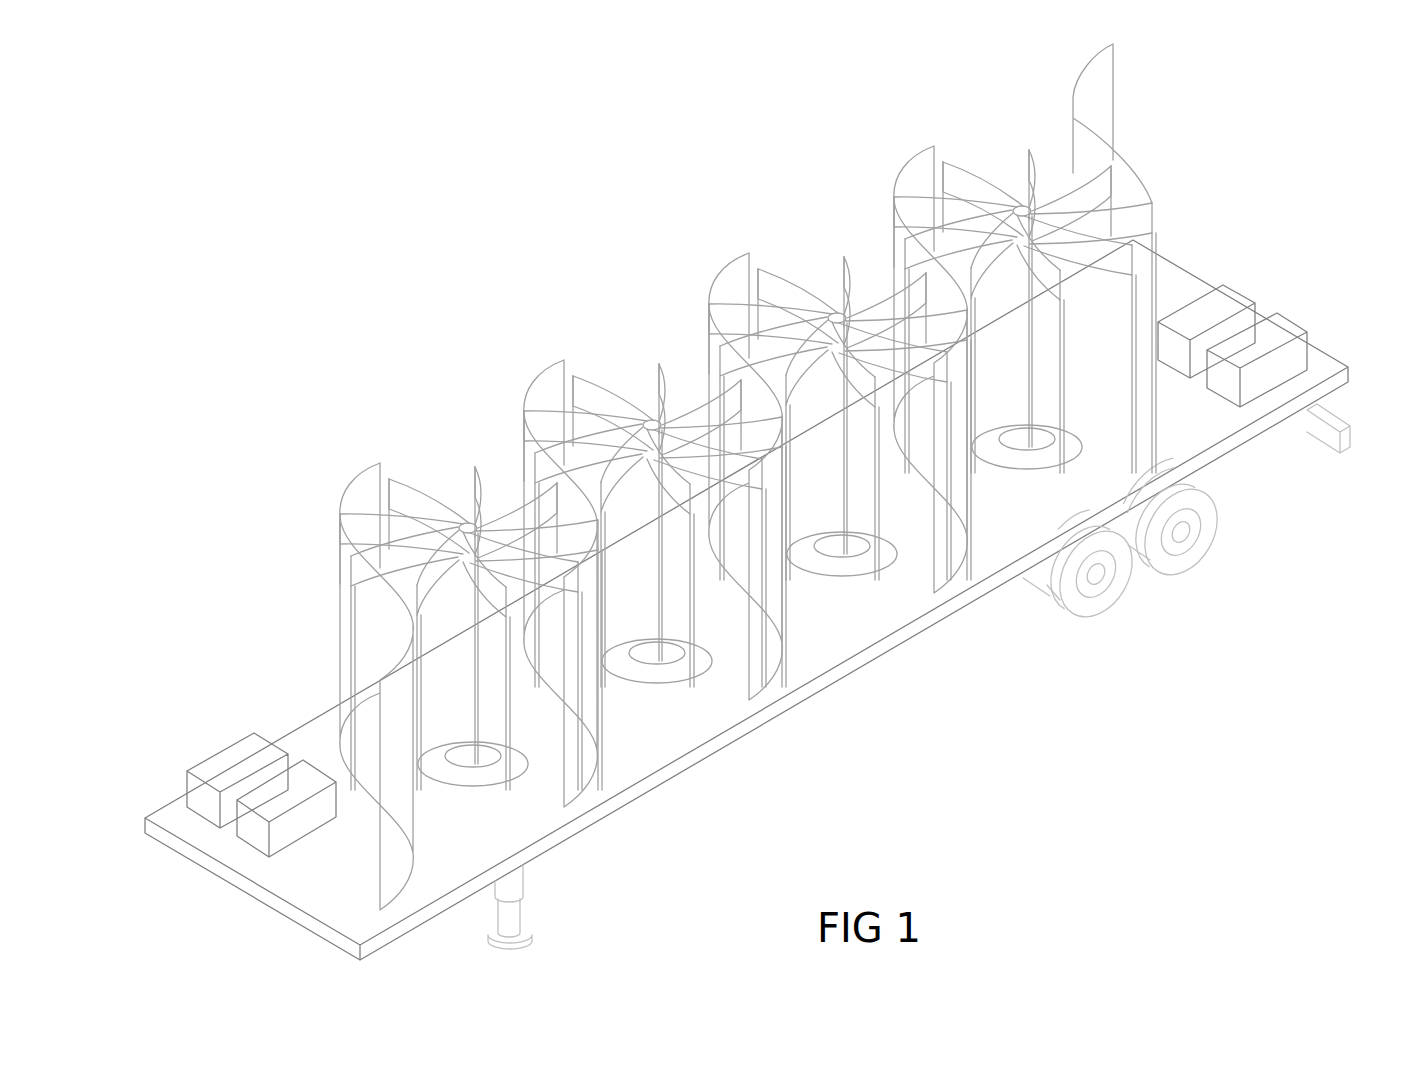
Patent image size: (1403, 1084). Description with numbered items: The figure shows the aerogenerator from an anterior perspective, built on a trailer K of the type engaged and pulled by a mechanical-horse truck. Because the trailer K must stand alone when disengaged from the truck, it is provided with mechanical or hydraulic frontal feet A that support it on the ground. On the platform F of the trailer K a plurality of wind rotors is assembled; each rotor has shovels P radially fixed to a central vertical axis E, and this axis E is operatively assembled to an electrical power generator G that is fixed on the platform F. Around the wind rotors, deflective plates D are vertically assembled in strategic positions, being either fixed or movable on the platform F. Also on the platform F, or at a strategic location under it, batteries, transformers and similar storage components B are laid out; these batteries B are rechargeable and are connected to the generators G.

The frontal feet A is at (523, 892).
The batteries B is at (223, 757).
The deflective plates D is at (523, 410).
The shovels P is at (653, 423).
The central vertical axis E is at (648, 420).
The platform F is at (313, 725).
The electrical power generator G is at (840, 570).
The trailer K is at (1188, 652).